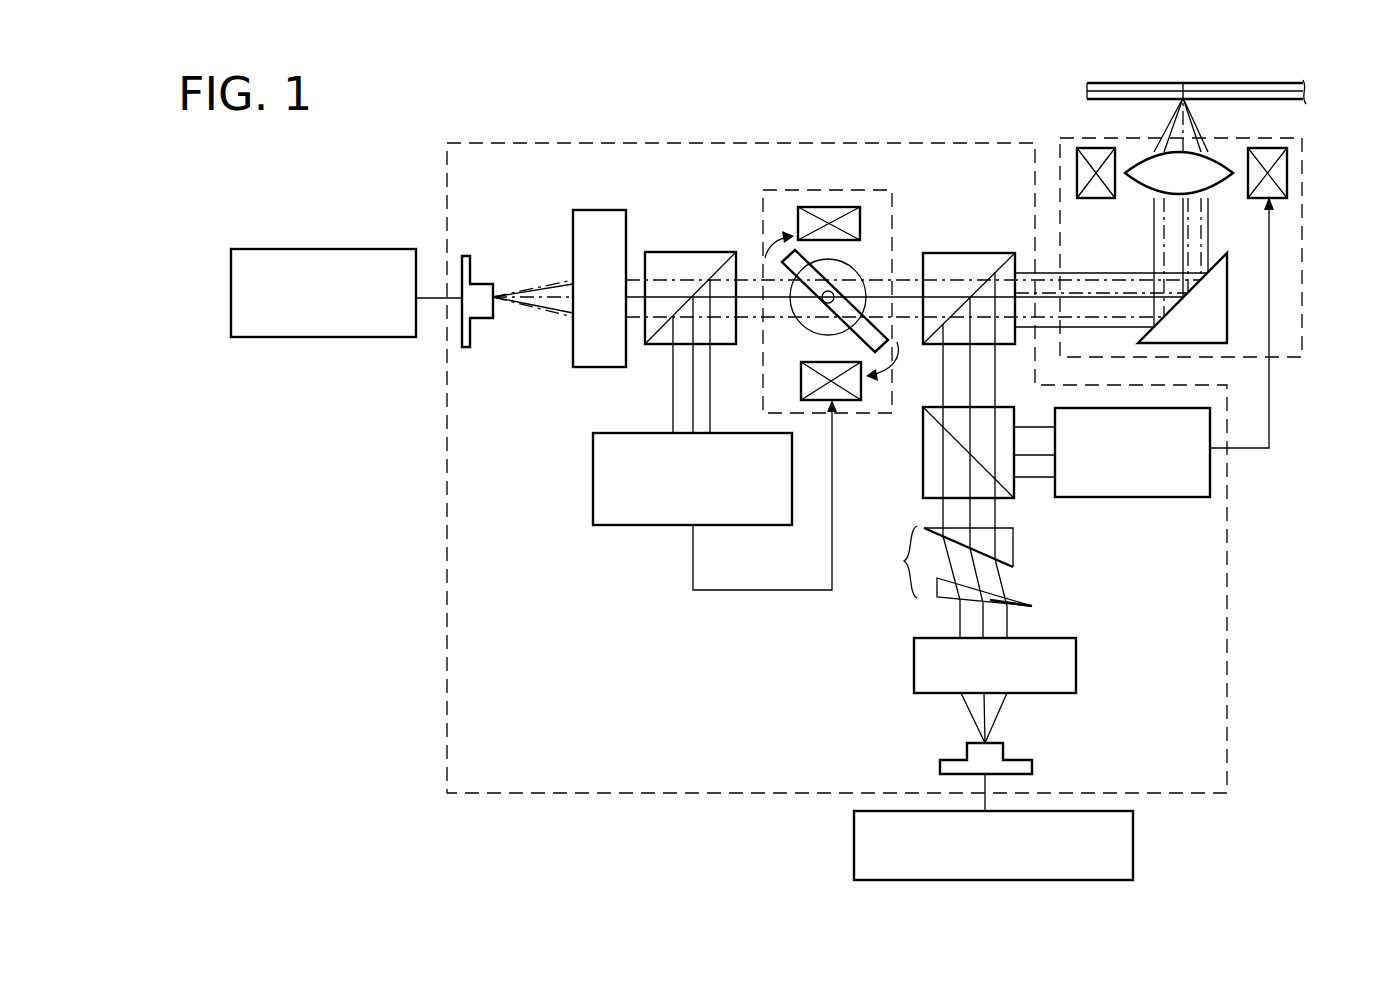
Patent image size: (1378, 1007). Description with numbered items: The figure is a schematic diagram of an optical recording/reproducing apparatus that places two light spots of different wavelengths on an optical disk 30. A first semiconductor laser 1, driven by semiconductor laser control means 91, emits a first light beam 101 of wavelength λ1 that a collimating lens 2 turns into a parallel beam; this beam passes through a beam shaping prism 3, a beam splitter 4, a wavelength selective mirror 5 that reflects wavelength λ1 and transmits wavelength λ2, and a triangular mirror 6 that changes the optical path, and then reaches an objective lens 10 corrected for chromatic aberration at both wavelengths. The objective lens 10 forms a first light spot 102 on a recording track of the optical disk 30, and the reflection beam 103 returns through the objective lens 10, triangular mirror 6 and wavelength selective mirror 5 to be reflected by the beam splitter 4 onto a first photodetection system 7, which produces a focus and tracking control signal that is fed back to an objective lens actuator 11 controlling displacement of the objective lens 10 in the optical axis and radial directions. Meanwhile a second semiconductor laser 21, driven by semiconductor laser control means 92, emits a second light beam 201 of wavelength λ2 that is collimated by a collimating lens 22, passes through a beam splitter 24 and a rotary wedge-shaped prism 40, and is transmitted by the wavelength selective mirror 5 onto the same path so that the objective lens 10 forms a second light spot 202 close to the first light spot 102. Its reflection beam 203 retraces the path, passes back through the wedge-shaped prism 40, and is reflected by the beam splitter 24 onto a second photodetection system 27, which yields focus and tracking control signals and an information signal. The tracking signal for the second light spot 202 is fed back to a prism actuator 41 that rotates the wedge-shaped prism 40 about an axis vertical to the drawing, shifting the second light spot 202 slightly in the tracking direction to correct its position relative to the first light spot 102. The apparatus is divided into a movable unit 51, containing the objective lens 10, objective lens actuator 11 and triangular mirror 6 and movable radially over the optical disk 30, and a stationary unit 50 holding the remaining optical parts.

The first semiconductor laser 1 is at (940, 768).
The collimating lens 2 is at (914, 665).
The beam shaping prism 3 is at (906, 560).
The beam splitter 4 is at (922, 478).
The wavelength selective mirror 5 is at (960, 253).
The triangular mirror 6 is at (1230, 345).
The first photodetection system 7 is at (1140, 500).
The objective lens 10 is at (1228, 198).
The objective lens actuator 11 is at (1096, 198).
The second semiconductor laser 21 is at (468, 348).
The collimating lens 22 is at (578, 211).
The beam splitter 24 is at (695, 252).
The second photodetection system 27 is at (592, 470).
The optical disk 30 is at (1283, 82).
The rotary wedge-shaped prism 40 is at (899, 350).
The prism actuator 41 is at (828, 207).
The stationary unit 50 is at (788, 141).
The movable unit 51 is at (1058, 138).
The semiconductor laser control means 91 is at (854, 852).
The semiconductor laser control means 92 is at (322, 338).
The first light beam 101 is at (998, 704).
The first light spot 102 is at (1180, 98).
The reflection beam 103 is at (1040, 478).
The second light beam 201 is at (557, 287).
The second light spot 202 is at (1185, 98).
The reflection beam 203 is at (677, 374).